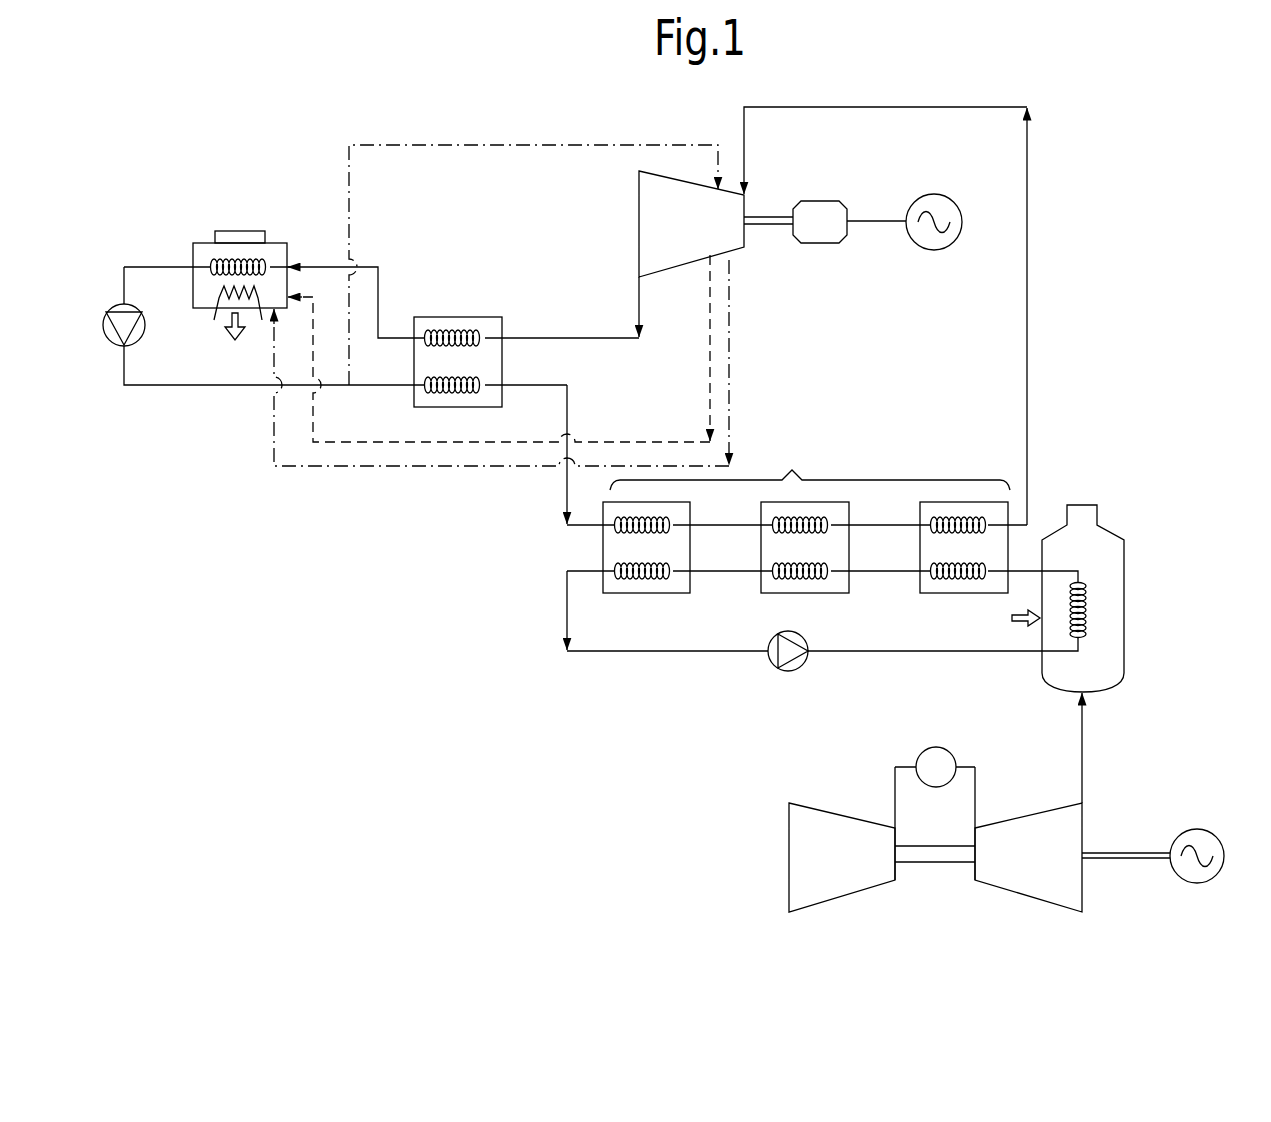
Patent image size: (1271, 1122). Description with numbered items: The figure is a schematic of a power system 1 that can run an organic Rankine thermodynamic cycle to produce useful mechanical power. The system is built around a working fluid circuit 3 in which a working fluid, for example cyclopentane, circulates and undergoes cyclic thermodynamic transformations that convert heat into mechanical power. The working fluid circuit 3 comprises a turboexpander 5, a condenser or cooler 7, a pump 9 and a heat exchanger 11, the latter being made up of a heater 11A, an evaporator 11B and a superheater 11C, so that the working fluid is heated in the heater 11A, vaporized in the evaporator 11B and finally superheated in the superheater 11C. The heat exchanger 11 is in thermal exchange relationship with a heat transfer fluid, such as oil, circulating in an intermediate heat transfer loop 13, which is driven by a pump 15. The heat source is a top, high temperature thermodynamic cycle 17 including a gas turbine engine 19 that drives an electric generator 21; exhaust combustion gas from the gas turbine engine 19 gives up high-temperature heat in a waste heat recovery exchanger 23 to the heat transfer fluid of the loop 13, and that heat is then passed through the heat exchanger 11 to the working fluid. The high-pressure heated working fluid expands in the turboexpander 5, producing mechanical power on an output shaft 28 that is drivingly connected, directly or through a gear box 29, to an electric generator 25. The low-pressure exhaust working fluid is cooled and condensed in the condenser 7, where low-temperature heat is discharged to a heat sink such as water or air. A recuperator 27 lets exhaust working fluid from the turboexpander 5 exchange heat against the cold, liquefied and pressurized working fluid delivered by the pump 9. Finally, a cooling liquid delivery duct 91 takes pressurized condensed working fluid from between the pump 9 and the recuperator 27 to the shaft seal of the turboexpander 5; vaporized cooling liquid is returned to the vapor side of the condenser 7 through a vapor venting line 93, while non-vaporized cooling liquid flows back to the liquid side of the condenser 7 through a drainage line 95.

The power system 1 is at (1072, 197).
The working fluid circuit 3 is at (552, 488).
The turboexpander 5 is at (655, 281).
The condenser 7 is at (185, 243).
The pump 9 is at (104, 323).
The heat exchanger 11 is at (806, 541).
The heater 11A is at (647, 588).
The evaporator 11B is at (828, 588).
The superheater 11C is at (933, 588).
The intermediate heat transfer loop 13 is at (652, 661).
The pump 15 is at (797, 666).
The top, high temperature thermodynamic cycle 17 is at (923, 840).
The gas turbine engine 19 is at (873, 893).
The electric generator 21 is at (1195, 848).
The waste heat recovery exchanger 23 is at (1100, 574).
The electric generator 25 is at (932, 195).
The recuperator 27 is at (455, 312).
The output shaft 28 is at (762, 222).
The gear box 29 is at (820, 215).
The cooling liquid delivery duct 91 is at (426, 168).
The vapor venting line 93 is at (468, 442).
The drainage line 95 is at (345, 468).